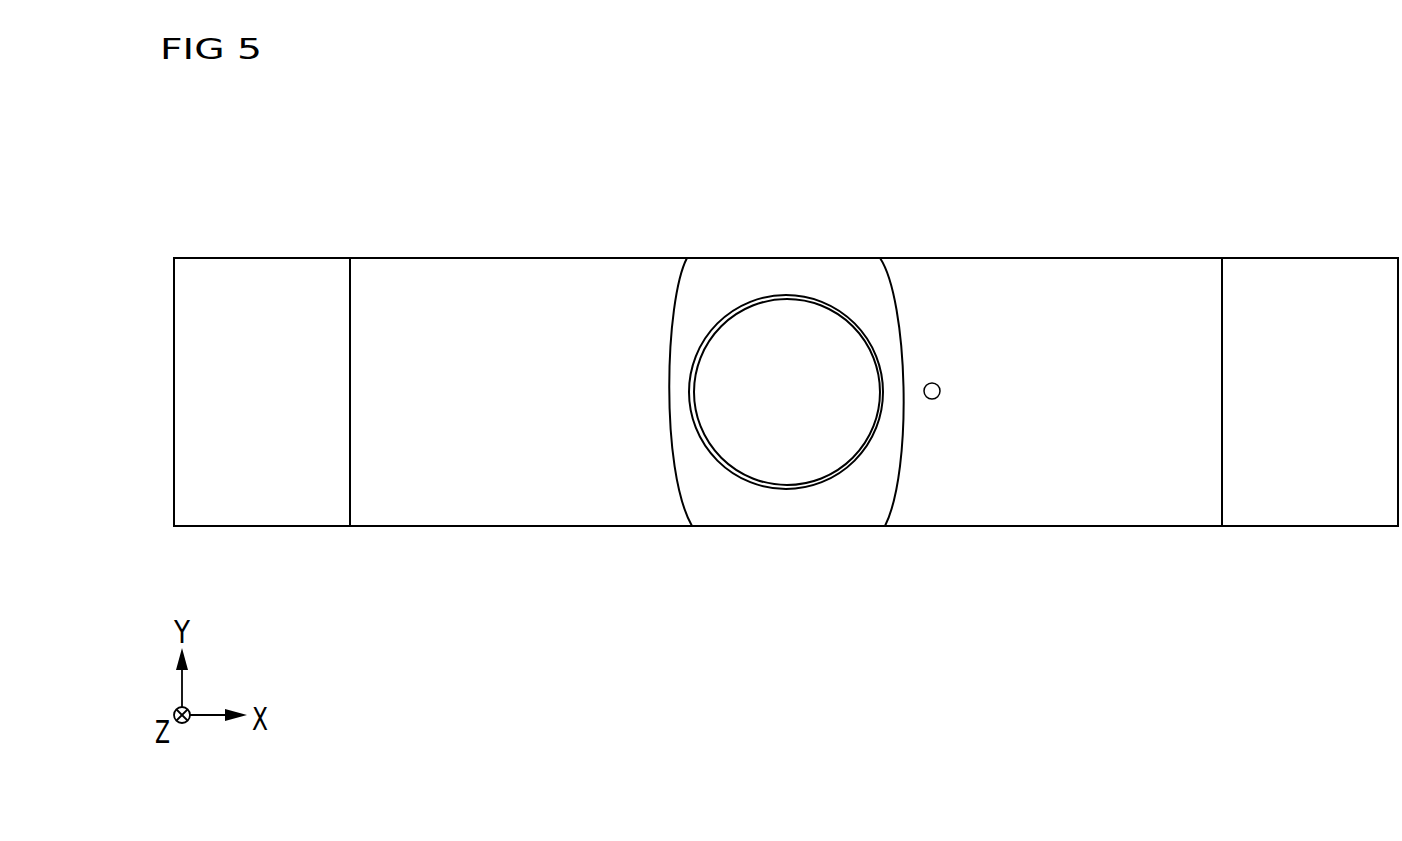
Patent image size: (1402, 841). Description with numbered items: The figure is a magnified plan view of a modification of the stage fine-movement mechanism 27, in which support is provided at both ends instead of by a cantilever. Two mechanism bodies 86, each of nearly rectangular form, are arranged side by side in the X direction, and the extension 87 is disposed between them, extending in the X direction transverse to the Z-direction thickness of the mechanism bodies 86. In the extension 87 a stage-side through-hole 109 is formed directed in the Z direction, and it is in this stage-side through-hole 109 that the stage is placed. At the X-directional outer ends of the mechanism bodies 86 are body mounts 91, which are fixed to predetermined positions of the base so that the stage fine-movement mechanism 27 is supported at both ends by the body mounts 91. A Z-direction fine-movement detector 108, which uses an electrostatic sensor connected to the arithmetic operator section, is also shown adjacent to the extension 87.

The stage fine-movement mechanism 27 is at (1098, 192).
The body mount 91 is at (244, 277).
The mechanism body 86 is at (447, 504).
The extension 87 is at (818, 503).
The Z-direction fine-movement detector 108 is at (933, 400).
The stage-side through-hole 109 is at (741, 470).